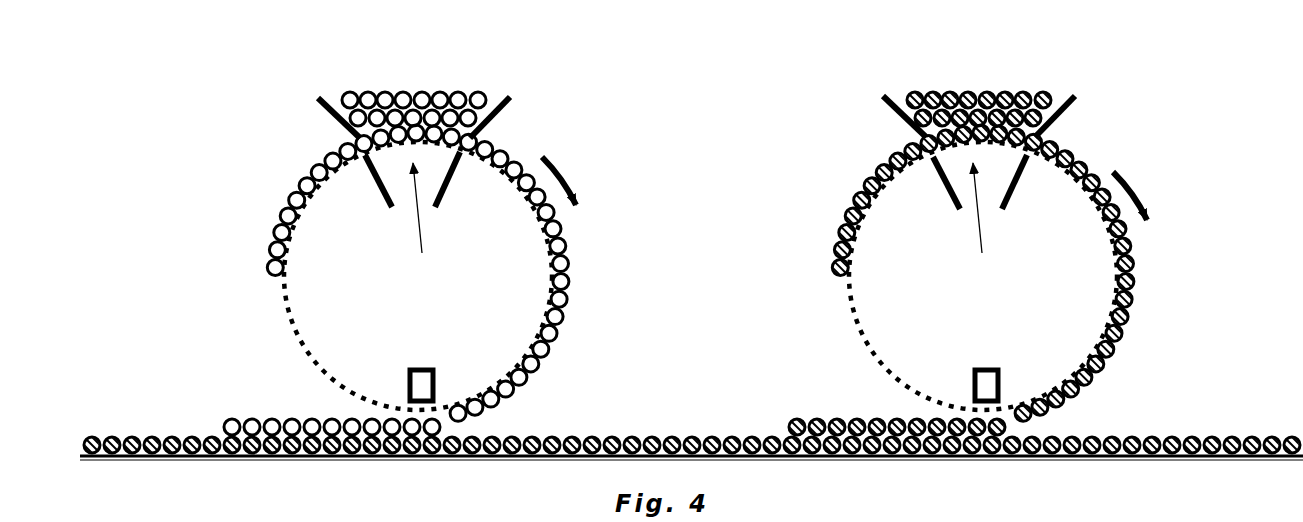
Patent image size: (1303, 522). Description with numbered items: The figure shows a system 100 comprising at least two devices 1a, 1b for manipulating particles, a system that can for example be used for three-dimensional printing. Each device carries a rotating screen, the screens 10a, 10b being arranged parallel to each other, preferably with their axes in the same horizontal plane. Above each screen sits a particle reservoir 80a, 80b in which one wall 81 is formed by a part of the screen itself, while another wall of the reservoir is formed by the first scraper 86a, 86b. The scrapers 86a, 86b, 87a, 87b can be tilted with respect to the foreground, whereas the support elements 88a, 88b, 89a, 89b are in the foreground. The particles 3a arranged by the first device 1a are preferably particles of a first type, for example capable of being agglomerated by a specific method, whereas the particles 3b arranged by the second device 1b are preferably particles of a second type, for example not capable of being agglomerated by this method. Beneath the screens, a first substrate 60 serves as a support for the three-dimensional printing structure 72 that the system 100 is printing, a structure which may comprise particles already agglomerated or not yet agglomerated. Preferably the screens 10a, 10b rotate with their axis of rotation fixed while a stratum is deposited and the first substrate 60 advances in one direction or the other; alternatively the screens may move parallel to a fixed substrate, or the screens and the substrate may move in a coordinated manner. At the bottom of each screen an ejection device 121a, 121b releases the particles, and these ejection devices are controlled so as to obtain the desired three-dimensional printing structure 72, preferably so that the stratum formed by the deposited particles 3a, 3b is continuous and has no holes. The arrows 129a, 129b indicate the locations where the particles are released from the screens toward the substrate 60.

The system 100 is at (700, 70).
The first device 1a is at (422, 65).
The second device 1b is at (983, 67).
The particles of a first type 3a is at (563, 235).
The particles of a second type 3b is at (1132, 250).
The first screen 10a is at (300, 348).
The second screen 10b is at (868, 348).
The first substrate 60 is at (559, 424).
The three-dimensional printing structure 72 is at (1120, 424).
The particle reservoir of the first device 80a is at (412, 140).
The particle reservoir of the second device 80b is at (976, 140).
The wall 81 is at (717, 215).
The first scraper of the first device 86a is at (345, 113).
The first scraper of the second device 86b is at (893, 112).
The second scraper of the first device 87a is at (498, 112).
The second scraper of the second device 87b is at (1063, 112).
The support element of the first device 88a is at (382, 190).
The support element of the second device 88b is at (943, 190).
The support element of the first device 89a is at (447, 190).
The support element of the second device 89b is at (1013, 190).
The ejection device of the first device 121a is at (408, 368).
The ejection device of the second device 121b is at (973, 368).
The first release position 129a is at (444, 368).
The second release position 129b is at (1007, 369).